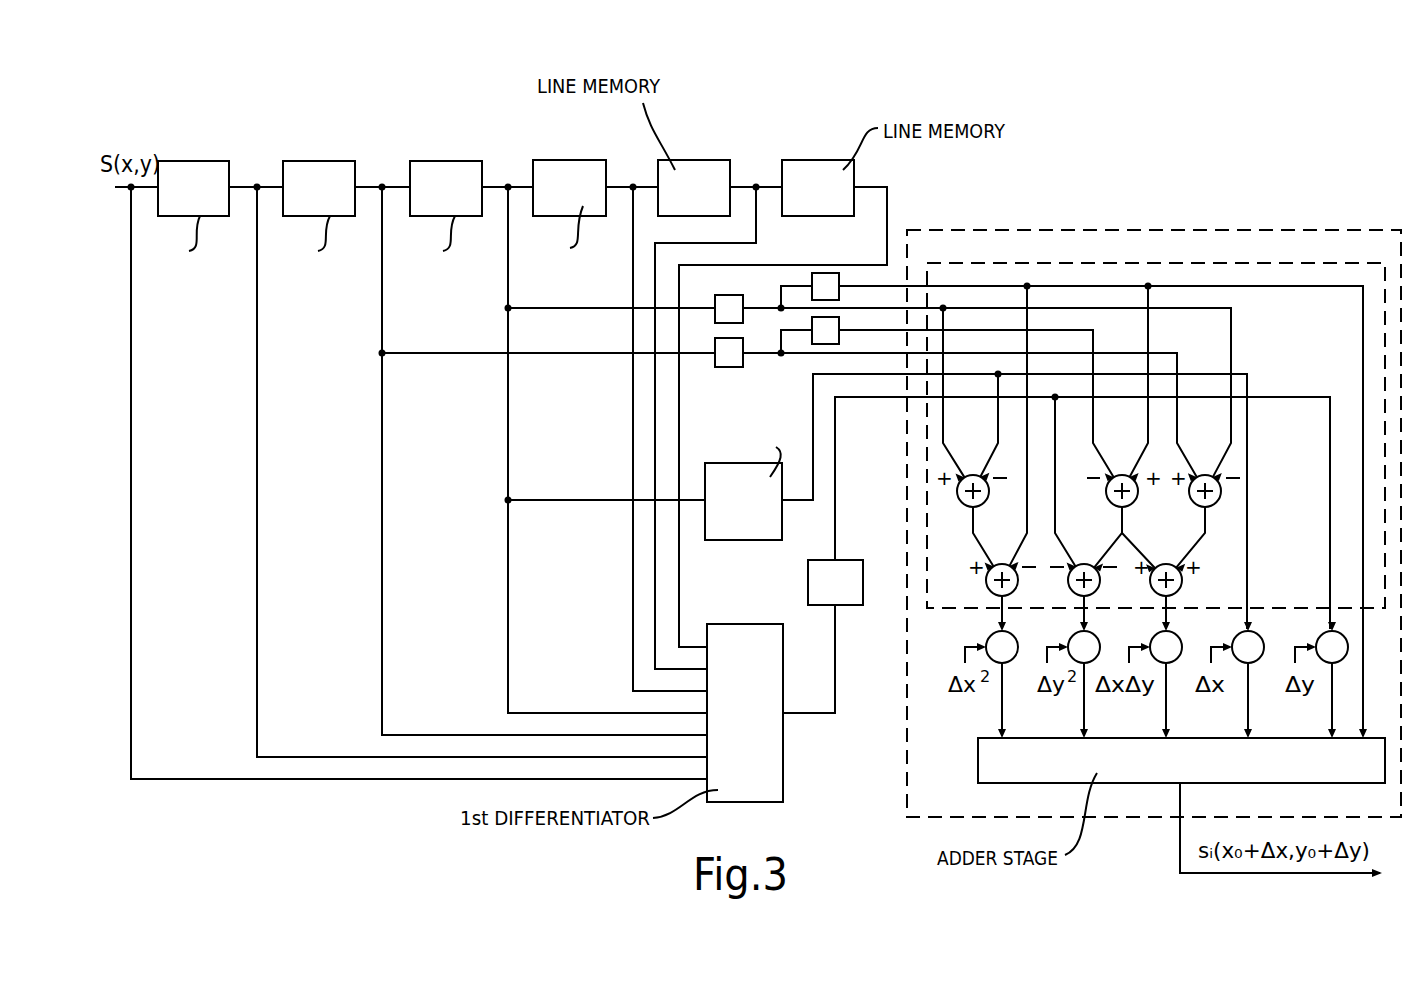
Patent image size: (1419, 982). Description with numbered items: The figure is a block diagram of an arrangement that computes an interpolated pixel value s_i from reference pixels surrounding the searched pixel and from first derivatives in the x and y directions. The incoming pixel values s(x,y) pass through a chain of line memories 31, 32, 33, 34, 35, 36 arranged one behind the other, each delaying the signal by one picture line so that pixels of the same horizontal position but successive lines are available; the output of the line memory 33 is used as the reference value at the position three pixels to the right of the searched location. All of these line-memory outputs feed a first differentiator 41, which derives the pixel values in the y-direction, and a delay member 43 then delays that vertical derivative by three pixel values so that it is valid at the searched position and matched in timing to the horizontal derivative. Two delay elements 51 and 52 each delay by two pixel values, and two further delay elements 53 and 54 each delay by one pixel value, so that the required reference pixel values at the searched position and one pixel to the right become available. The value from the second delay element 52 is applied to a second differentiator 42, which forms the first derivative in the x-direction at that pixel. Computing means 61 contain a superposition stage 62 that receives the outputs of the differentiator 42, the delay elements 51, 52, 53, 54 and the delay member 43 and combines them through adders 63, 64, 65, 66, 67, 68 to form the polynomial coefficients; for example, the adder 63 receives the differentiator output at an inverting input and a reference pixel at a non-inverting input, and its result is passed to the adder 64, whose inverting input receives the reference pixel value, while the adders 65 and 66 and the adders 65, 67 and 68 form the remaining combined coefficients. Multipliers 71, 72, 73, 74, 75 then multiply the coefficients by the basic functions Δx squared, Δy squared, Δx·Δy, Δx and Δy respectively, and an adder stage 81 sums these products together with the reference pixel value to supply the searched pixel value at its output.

The line memory 31 is at (178, 161).
The line memory 32 is at (312, 161).
The line memory 33 is at (437, 161).
The line memory 34 is at (562, 160).
The line memory 35 is at (686, 160).
The line memory 36 is at (805, 160).
The first differentiator 41 is at (784, 765).
The second differentiator 42 is at (725, 540).
The delay member 43 is at (848, 605).
The first delay element 51 is at (728, 368).
The second delay element 52 is at (727, 293).
The third delay element 53 is at (820, 345).
The fourth delay element 54 is at (840, 280).
The computing means 61 is at (990, 228).
The superposition stage 62 is at (1082, 260).
The adder 63 is at (985, 503).
The adder 64 is at (1017, 587).
The adder 65 is at (1136, 497).
The adder 66 is at (1099, 587).
The adder 67 is at (1220, 496).
The adder 68 is at (1180, 588).
The multiplier 71 is at (1008, 661).
The multiplier 72 is at (1085, 663).
The multiplier 73 is at (1170, 663).
The multiplier 74 is at (1252, 663).
The multiplier 75 is at (1340, 660).
The adder stage 81 is at (975, 752).